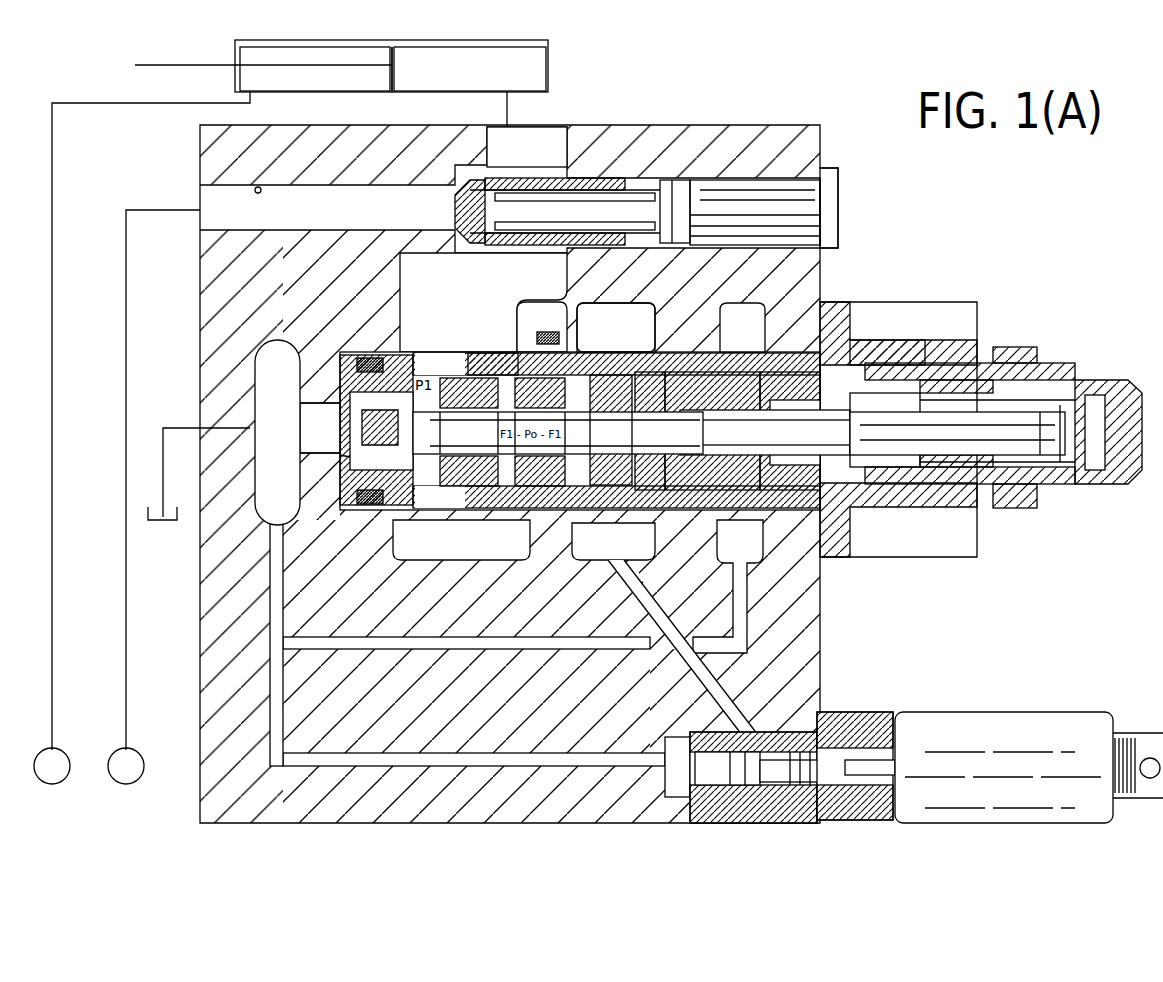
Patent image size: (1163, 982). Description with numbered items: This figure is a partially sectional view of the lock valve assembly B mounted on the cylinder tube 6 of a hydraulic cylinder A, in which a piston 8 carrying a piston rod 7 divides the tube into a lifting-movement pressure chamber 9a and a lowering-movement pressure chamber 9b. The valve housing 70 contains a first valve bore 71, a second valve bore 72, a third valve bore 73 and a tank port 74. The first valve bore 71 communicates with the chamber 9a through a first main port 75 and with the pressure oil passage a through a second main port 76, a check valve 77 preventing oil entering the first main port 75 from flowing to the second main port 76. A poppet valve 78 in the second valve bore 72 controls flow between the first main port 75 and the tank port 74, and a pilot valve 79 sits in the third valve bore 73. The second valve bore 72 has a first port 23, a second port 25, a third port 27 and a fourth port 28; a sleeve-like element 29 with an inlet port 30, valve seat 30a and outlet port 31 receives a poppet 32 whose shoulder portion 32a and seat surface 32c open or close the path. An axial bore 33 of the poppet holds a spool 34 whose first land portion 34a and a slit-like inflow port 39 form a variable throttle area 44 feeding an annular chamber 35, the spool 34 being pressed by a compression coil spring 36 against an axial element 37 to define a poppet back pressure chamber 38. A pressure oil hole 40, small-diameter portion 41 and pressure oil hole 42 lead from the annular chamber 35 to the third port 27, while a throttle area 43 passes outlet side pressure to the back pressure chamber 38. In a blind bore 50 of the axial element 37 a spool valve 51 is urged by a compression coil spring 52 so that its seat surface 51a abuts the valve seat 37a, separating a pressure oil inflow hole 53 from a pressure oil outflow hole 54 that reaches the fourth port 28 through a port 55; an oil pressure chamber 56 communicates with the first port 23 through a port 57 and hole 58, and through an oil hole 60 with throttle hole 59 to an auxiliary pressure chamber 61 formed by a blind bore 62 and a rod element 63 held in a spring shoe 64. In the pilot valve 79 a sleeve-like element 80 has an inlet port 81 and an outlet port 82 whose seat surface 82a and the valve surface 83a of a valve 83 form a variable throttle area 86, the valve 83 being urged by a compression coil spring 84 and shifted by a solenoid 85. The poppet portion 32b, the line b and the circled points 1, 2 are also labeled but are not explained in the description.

The signal terminal 1 is at (52, 766).
The signal terminal 2 is at (126, 766).
The cylinder tube 6 is at (548, 82).
The piston rod 7 is at (177, 65).
The piston 8 is at (394, 80).
The lifting-movement pressure chamber 9a is at (462, 68).
The lowering-movement pressure chamber 9b is at (311, 78).
The hydraulic cylinder A is at (558, 62).
The lock valve assembly B is at (888, 282).
The pressure oil passage a is at (126, 530).
The lead b is at (52, 490).
The first port 23 is at (477, 561).
The second port 25 is at (303, 413).
The third port 27 is at (578, 561).
The fourth port 28 is at (726, 561).
The sleeve-like element 29 is at (545, 313).
The inlet port 30 is at (440, 351).
The valve seat 30a is at (389, 390).
The outlet port 31 is at (346, 460).
The poppet 32 is at (377, 476).
The shoulder portion 32a is at (493, 364).
The housing portion 32b is at (557, 393).
The seat surface 32c is at (370, 400).
The axial bore 33 is at (482, 471).
The spool 34 is at (550, 471).
The first land portion 34a is at (460, 466).
The annular chamber 35 is at (611, 430).
The compression coil spring 36 is at (385, 427).
The axial element 37 is at (752, 365).
The valve seat 37a is at (696, 462).
The poppet back pressure chamber 38 is at (632, 352).
The slit-like inflow port 39 is at (616, 364).
The pressure oil hole 40 is at (543, 351).
The small-diameter portion 41 is at (574, 364).
The pressure oil hole 42 is at (616, 327).
The throttle area 43 is at (660, 355).
The variable throttle area 44 is at (490, 395).
The blind bore 50 is at (655, 467).
The spool valve 51 is at (880, 351).
The seat surface 51a is at (829, 385).
The compression coil spring 52 is at (885, 412).
The pressure oil inflow hole 53 is at (720, 359).
The pressure oil outflow hole 54 is at (790, 414).
The port 55 is at (802, 516).
The oil pressure chamber 56 is at (648, 431).
The port 57 is at (697, 516).
The hole 58 is at (513, 521).
The throttle hole 59 is at (702, 471).
The oil hole 60 is at (750, 467).
The auxiliary pressure chamber 61 is at (874, 442).
The blind bore 62 is at (770, 432).
The rod element 63 is at (1030, 482).
The spring shoe 64 is at (1047, 384).
The valve housing 70 is at (808, 621).
The first valve bore 71 is at (645, 178).
The second valve bore 72 is at (378, 356).
The third valve bore 73 is at (776, 735).
The tank port 74 is at (259, 456).
The first main port 75 is at (568, 136).
The second main port 76 is at (258, 187).
The check valve 77 is at (590, 246).
The poppet valve 78 is at (668, 306).
The pilot valve 79 is at (701, 811).
The sleeve-like element 80 is at (798, 790).
The inlet port 81 is at (770, 788).
The outlet port 82 is at (668, 760).
The seat surface 82a is at (668, 788).
The valve 83 is at (727, 790).
The valve surface 83a is at (702, 756).
The compression coil spring 84 is at (849, 838).
The solenoid 85 is at (988, 824).
The variable throttle area 86 is at (720, 792).